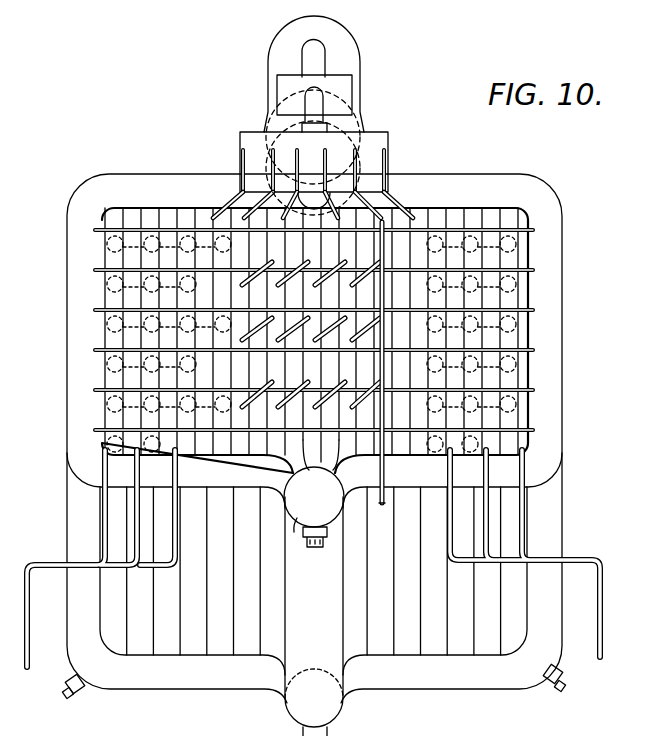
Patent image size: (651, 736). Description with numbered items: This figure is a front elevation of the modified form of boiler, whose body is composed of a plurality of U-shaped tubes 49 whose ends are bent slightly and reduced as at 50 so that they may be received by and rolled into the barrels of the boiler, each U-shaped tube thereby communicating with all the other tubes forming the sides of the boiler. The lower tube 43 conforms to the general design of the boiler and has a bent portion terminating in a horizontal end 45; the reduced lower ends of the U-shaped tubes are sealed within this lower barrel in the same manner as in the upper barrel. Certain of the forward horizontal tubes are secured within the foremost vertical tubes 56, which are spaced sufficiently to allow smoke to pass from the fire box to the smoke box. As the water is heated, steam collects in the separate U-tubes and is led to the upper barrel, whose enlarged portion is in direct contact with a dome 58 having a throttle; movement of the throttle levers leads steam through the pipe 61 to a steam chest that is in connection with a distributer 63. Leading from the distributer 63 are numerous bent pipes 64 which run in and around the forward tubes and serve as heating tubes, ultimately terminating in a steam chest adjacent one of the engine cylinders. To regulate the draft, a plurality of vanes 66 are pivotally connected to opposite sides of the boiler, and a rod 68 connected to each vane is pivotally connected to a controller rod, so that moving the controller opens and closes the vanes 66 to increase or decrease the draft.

The lower tube 43 is at (330, 575).
The horizontal end 45 is at (345, 708).
The U-shaped tubes 49 is at (146, 178).
The reduced ends 50 is at (356, 483).
The foremost vertical tubes 56 is at (113, 258).
The dome 58 is at (356, 60).
The pipe 61 is at (313, 60).
The distributer 63 is at (347, 85).
The bent pipes 64 is at (242, 160).
The vanes 66 is at (113, 228).
The rod 68 is at (384, 222).